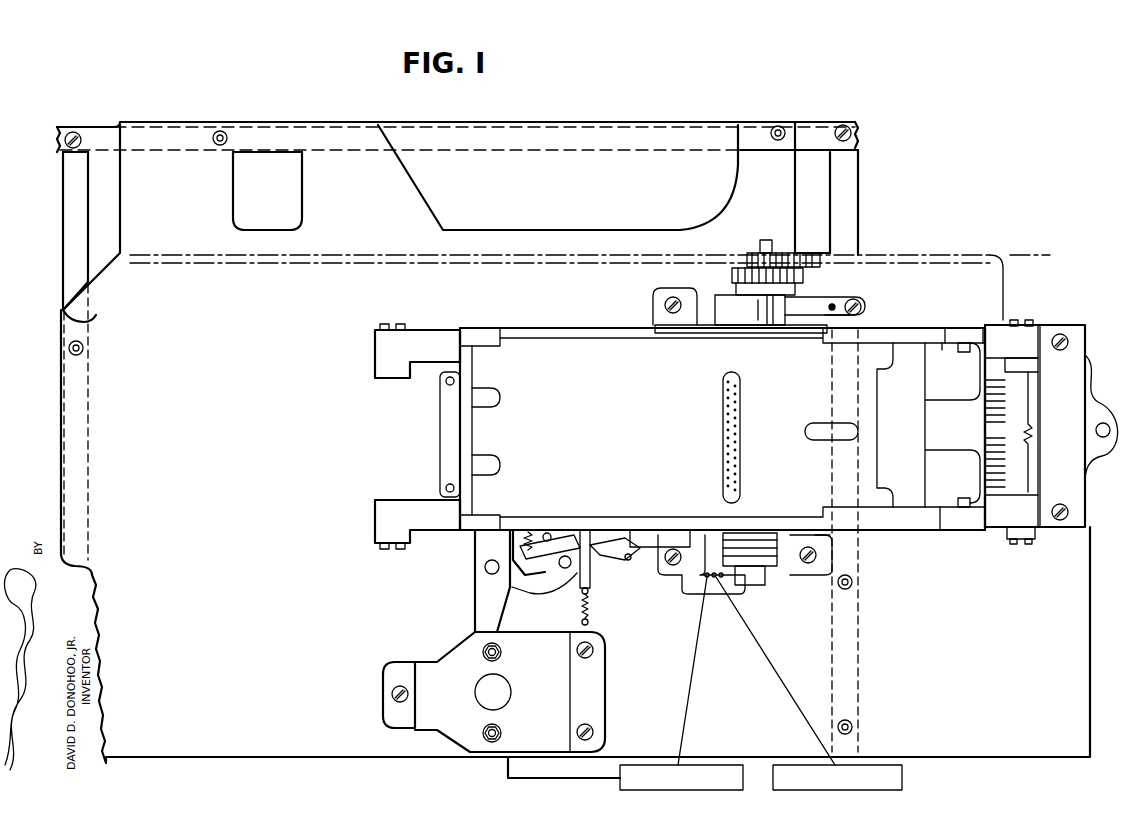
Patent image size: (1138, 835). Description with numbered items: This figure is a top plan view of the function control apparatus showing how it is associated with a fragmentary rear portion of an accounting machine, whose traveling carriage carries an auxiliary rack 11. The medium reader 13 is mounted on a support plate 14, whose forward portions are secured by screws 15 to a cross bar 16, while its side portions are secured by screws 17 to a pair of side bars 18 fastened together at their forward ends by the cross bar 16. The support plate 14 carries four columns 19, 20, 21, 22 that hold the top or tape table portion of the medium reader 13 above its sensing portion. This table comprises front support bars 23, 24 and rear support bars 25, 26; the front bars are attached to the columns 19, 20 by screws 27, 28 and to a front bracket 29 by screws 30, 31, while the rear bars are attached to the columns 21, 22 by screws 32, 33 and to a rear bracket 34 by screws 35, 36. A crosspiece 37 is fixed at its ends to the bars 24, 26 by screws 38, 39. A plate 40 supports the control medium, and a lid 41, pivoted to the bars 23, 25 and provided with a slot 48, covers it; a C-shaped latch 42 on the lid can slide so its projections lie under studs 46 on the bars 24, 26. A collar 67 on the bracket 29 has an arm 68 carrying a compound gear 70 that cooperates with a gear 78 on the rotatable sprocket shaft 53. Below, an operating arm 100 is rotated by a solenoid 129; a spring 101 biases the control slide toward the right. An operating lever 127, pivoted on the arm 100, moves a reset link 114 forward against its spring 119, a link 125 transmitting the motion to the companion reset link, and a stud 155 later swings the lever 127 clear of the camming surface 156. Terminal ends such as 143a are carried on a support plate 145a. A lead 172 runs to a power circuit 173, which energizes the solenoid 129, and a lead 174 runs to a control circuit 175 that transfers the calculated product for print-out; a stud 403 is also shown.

The auxiliary rack 11 is at (1010, 253).
The medium reader 13 is at (362, 348).
The support plate 14 is at (96, 310).
The screws 15 is at (222, 132).
The cross bar 16 is at (470, 122).
The screws 17 is at (70, 348).
The side bars 18 is at (62, 200).
The column 19 is at (396, 368).
The column 20 is at (1018, 365).
The column 21 is at (378, 538).
The column 22 is at (990, 545).
The front support bar 23 is at (548, 328).
The front support bar 24 is at (902, 328).
The rear support bar 25 is at (378, 508).
The rear support bar 26 is at (970, 532).
The screw 27 is at (396, 325).
The screw 28 is at (1014, 322).
The front bracket 29 is at (662, 302).
The screw 30 is at (660, 322).
The screw 31 is at (855, 312).
The screw 32 is at (385, 548).
The screw 33 is at (1025, 545).
The rear bracket 34 is at (785, 585).
The screw 35 is at (658, 528).
The screw 36 is at (822, 540).
The crosspiece 37 is at (1083, 345).
The screw 38 is at (1058, 334).
The screw 39 is at (1068, 514).
The plate 40 is at (438, 398).
The lid 41 is at (510, 335).
The C-shaped latch 42 is at (915, 492).
The studs 46 is at (960, 340).
The slot 48 is at (742, 380).
The rotatable shaft 53 is at (800, 292).
The collar 67 is at (717, 302).
The arm 68 is at (862, 300).
The compound gear 70 is at (773, 246).
The gear 78 is at (740, 275).
The operating arm 100 is at (478, 578).
The spring 101 is at (1088, 378).
The reset link 114 is at (592, 578).
The spring 119 is at (582, 608).
The link 125 is at (620, 535).
The operating lever 127 is at (560, 575).
The solenoid 129 is at (455, 660).
The terminal end of contact element 143a is at (1000, 385).
The support plate 145a is at (1015, 462).
The stud 155 is at (548, 533).
The camming surface 156 is at (575, 538).
The lead 172 is at (690, 664).
The power circuit 173 is at (660, 765).
The lead 174 is at (787, 694).
The control circuit 175 is at (800, 765).
The pivot pin 403 is at (1105, 440).